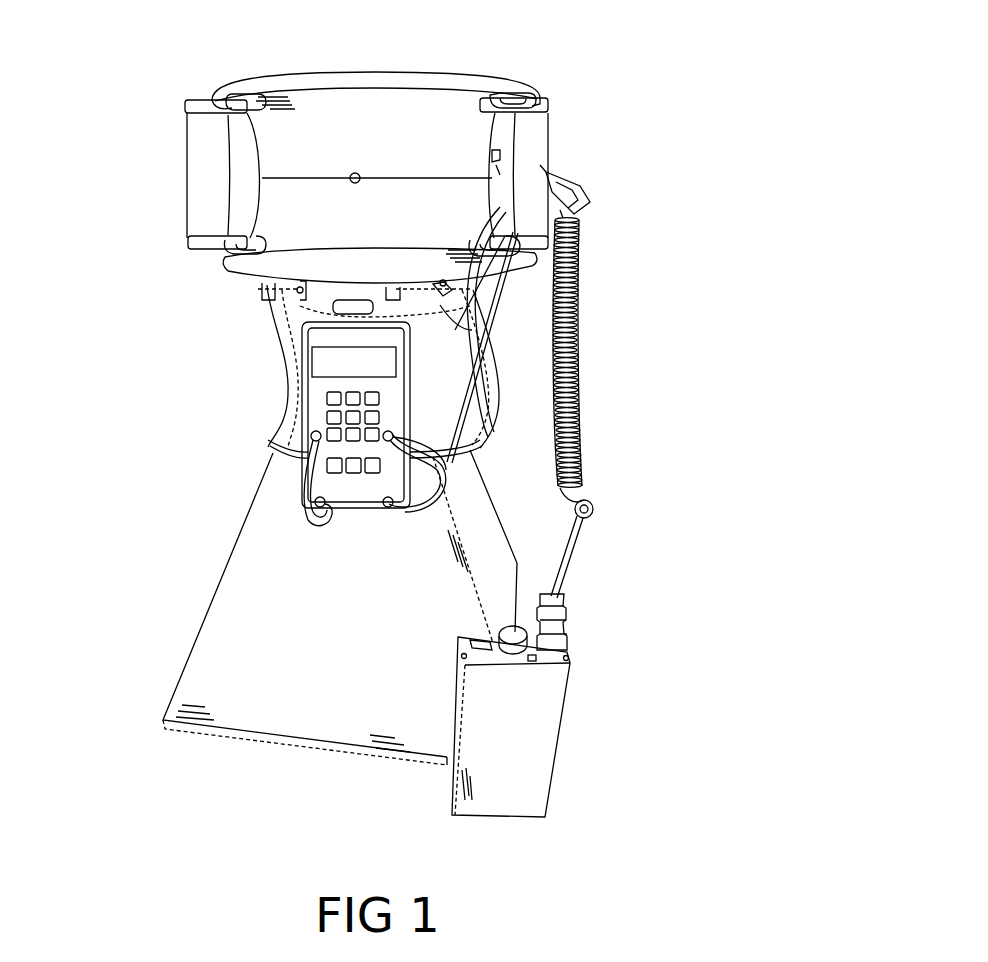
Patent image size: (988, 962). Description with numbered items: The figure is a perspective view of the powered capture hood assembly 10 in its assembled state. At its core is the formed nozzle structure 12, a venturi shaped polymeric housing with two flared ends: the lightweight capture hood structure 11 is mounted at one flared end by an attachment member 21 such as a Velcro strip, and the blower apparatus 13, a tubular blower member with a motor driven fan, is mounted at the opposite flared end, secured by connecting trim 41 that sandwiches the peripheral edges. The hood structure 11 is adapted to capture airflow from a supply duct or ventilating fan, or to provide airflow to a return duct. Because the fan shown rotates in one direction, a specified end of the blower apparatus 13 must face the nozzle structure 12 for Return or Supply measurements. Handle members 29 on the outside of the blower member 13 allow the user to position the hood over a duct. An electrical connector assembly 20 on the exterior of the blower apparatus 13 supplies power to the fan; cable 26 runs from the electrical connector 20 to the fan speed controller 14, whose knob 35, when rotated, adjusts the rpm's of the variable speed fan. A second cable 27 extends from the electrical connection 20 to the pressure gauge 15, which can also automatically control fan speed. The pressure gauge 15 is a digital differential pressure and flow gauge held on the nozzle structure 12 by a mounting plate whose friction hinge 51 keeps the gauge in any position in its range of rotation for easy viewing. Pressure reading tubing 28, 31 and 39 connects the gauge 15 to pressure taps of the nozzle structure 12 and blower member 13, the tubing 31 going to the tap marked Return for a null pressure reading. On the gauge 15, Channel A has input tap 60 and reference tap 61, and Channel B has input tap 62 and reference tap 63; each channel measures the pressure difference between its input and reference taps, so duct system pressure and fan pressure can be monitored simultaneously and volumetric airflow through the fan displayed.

The powered capture hood assembly 10 is at (208, 337).
The capture hood structure 11 is at (188, 611).
The formed nozzle structure 12 is at (272, 339).
The blower apparatus 13 is at (517, 67).
The fan speed controller 14 is at (569, 733).
The pressure gauge 15 is at (297, 404).
The electrical connector assembly 20 is at (497, 153).
The attachment member 21 is at (270, 442).
The cable 26 is at (565, 541).
The fan speed control cable 27 is at (588, 208).
The pressure reading tubing 28 is at (490, 410).
The handle members 29 is at (192, 153).
The tubing 31 is at (308, 483).
The knob 35 is at (503, 654).
The pressure reading tubing 39 is at (440, 487).
The connecting trim 41 is at (228, 260).
The friction hinge 51 is at (306, 292).
The input tap 60 is at (311, 436).
The reference tap 61 is at (322, 501).
The input tap 62 is at (392, 436).
The reference tap 63 is at (385, 504).